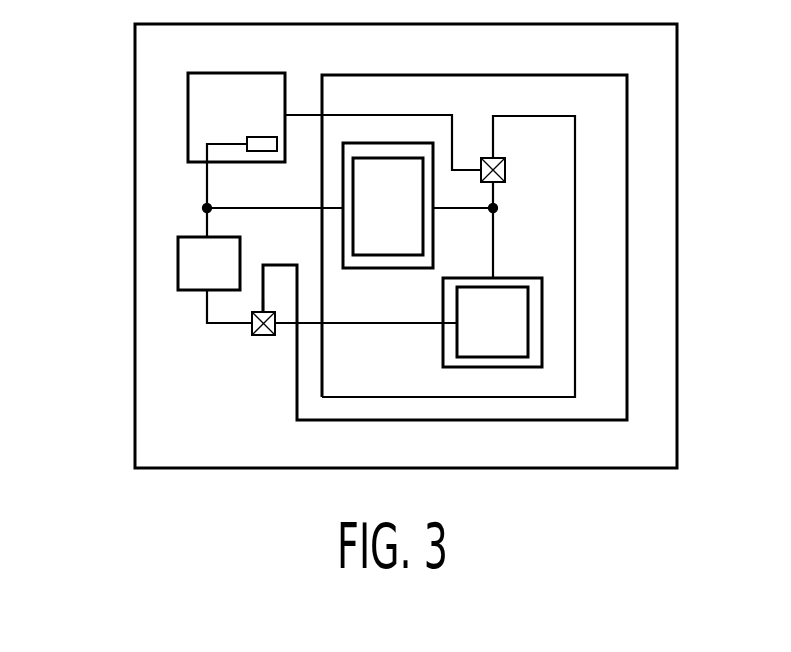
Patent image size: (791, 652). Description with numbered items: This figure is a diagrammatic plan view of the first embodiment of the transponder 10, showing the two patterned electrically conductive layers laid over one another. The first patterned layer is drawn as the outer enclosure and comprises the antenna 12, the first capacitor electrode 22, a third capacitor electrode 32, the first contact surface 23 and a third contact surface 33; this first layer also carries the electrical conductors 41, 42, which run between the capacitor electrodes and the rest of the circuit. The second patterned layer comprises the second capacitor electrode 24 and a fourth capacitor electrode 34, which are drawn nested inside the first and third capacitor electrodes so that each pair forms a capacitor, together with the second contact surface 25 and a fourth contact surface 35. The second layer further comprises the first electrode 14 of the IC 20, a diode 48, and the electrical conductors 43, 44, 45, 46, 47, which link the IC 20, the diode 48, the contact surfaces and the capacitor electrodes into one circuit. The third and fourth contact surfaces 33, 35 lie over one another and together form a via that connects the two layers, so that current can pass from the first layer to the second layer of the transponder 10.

The transponder 10 is at (98, 106).
The antenna 12 is at (627, 397).
The first electrode of the IC 14 is at (262, 152).
The IC 20 is at (197, 109).
The first capacitor electrode 22 is at (536, 288).
The first contact surface 23 is at (268, 336).
The second capacitor electrode 24 is at (507, 290).
The second contact surface 25 is at (251, 334).
The third capacitor electrode 32 is at (407, 269).
The third contact surface 33 is at (490, 155).
The fourth capacitor electrode 34 is at (368, 257).
The fourth contact surface 35 is at (506, 168).
The electrical conductor 41 is at (456, 210).
The electrical conductor 42 is at (497, 200).
The electrical conductor 43 is at (305, 114).
The electrical conductor 44 is at (207, 222).
The electrical conductor 45 is at (300, 207).
The electrical conductor 46 is at (205, 320).
The electrical conductor 47 is at (361, 324).
The diode 48 is at (178, 260).